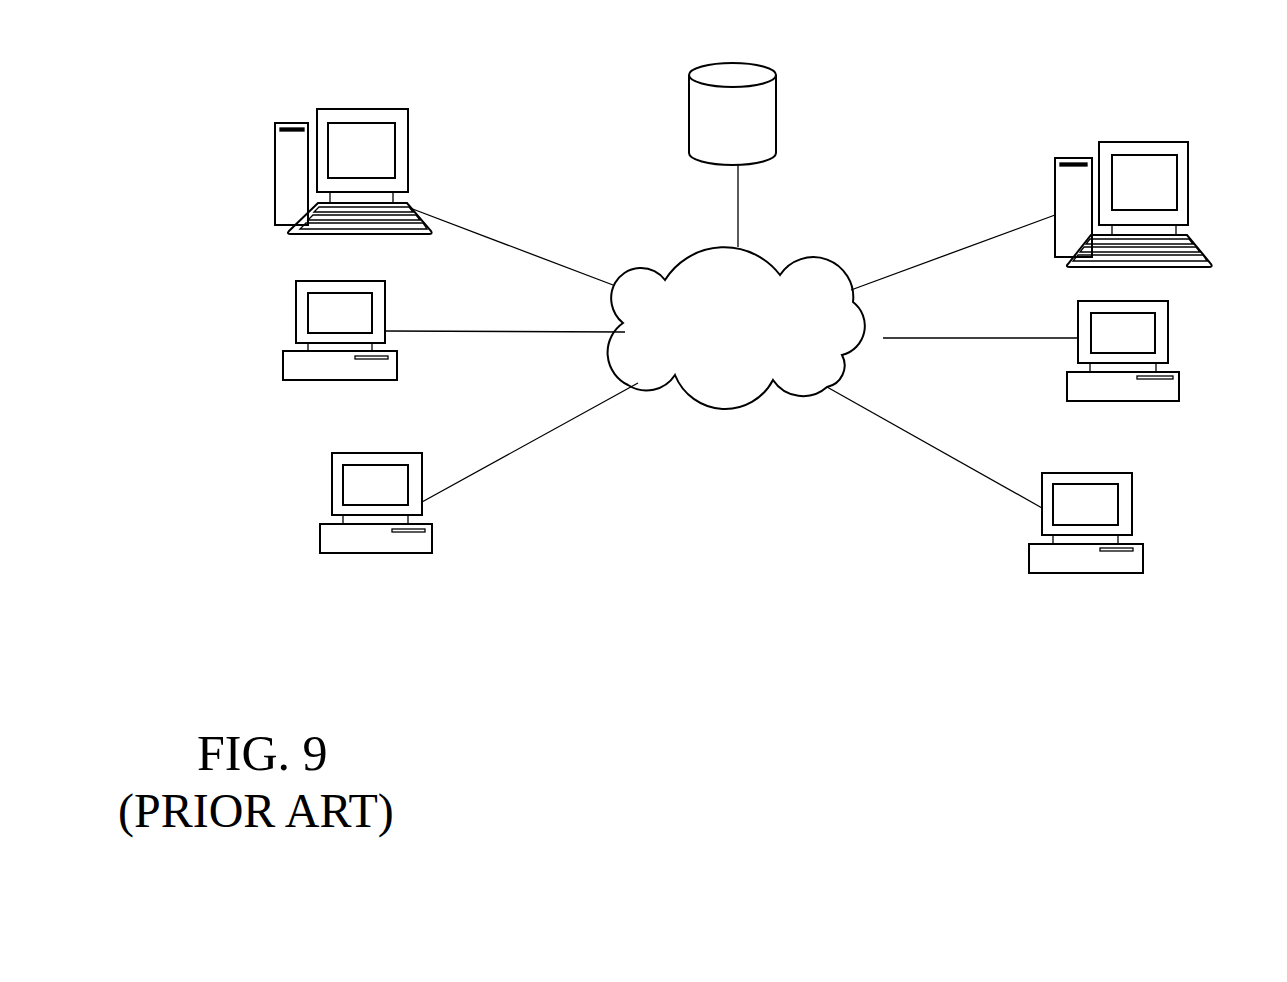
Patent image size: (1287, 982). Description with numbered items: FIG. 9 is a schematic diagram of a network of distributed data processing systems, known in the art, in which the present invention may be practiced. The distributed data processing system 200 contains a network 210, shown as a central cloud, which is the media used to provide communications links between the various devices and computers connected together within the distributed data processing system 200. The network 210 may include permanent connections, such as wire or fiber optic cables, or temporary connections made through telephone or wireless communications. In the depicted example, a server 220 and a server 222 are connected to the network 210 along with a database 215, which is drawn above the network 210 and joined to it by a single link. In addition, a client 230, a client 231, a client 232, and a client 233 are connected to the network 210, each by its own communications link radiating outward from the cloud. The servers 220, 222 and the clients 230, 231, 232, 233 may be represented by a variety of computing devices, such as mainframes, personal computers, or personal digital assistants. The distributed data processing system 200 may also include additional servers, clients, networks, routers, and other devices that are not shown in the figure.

The distributed data processing system 200 is at (798, 717).
The network 210 is at (738, 410).
The database 215 is at (688, 113).
The server 220 is at (275, 170).
The server 222 is at (1190, 192).
The client 230 is at (283, 367).
The client 231 is at (1178, 388).
The client 232 is at (320, 539).
The client 233 is at (1143, 558).